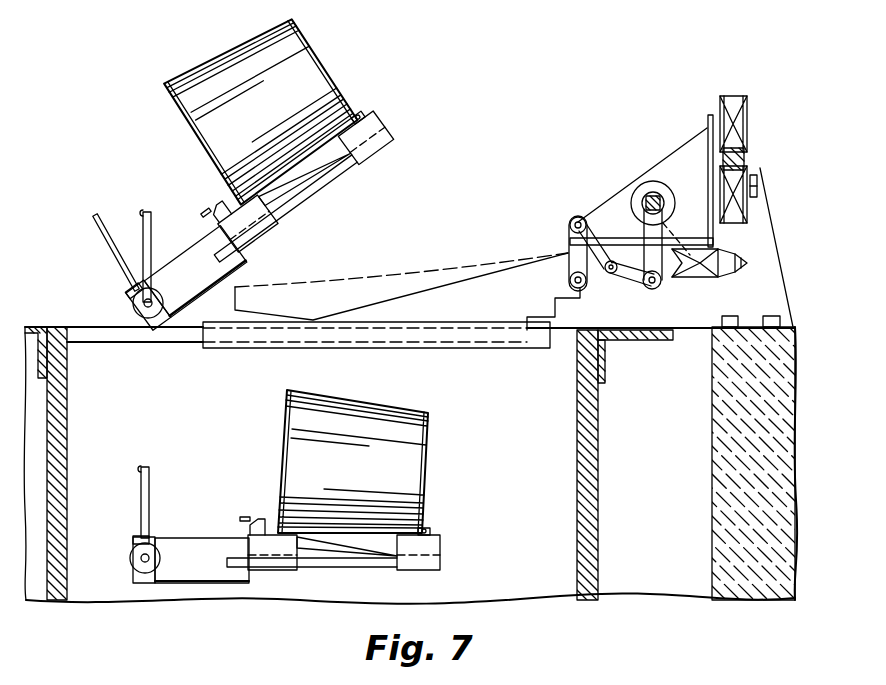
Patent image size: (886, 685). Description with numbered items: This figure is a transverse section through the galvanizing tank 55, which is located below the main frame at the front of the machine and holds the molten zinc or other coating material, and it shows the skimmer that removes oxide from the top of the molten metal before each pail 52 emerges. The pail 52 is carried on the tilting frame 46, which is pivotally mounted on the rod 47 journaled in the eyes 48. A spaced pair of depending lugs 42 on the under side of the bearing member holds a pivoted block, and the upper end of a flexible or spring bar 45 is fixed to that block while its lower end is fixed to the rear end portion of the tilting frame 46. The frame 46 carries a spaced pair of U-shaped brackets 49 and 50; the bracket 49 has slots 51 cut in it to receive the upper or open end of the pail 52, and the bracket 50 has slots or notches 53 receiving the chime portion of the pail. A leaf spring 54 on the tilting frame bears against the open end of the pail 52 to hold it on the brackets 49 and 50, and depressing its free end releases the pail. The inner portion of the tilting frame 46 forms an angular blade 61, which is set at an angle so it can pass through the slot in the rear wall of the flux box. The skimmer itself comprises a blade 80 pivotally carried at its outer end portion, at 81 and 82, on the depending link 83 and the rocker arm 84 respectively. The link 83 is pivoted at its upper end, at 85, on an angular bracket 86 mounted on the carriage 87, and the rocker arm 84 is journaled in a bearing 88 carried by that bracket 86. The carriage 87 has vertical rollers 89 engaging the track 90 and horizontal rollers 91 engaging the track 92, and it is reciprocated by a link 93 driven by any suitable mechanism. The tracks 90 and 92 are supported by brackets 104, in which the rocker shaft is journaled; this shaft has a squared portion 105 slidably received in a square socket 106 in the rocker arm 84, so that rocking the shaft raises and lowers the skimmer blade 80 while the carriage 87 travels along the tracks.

The depending lugs 42 is at (143, 214).
The flexible or spring bar 45 is at (112, 251).
The tilting frame 46 is at (128, 294).
The rod 47 is at (140, 309).
The eyes 48 is at (143, 320).
The U-shaped bracket 49 is at (258, 233).
The U-shaped bracket 50 is at (367, 157).
The slots 51 is at (223, 207).
The pail 52 is at (292, 267).
The slots or notches 53 is at (366, 109).
The leaf spring 54 is at (312, 196).
The galvanizing tank 55 is at (67, 584).
The angular blade 61 is at (188, 292).
The skimmer blade 80 is at (390, 266).
The pivot 81 is at (586, 285).
The pivot 82 is at (653, 290).
The depending link 83 is at (572, 253).
The rocker arm 84 is at (666, 222).
The pivot 85 is at (578, 217).
The angular bracket 86 is at (613, 197).
The carriage 87 is at (708, 113).
The bearing 88 is at (668, 200).
The vertical rollers 89 is at (746, 118).
The track 90 is at (746, 160).
The horizontal rollers 91 is at (700, 270).
The track 92 is at (735, 266).
The link 93 is at (758, 183).
The brackets 104 is at (712, 318).
The squared portion 105 is at (648, 191).
The square socket 106 is at (658, 195).